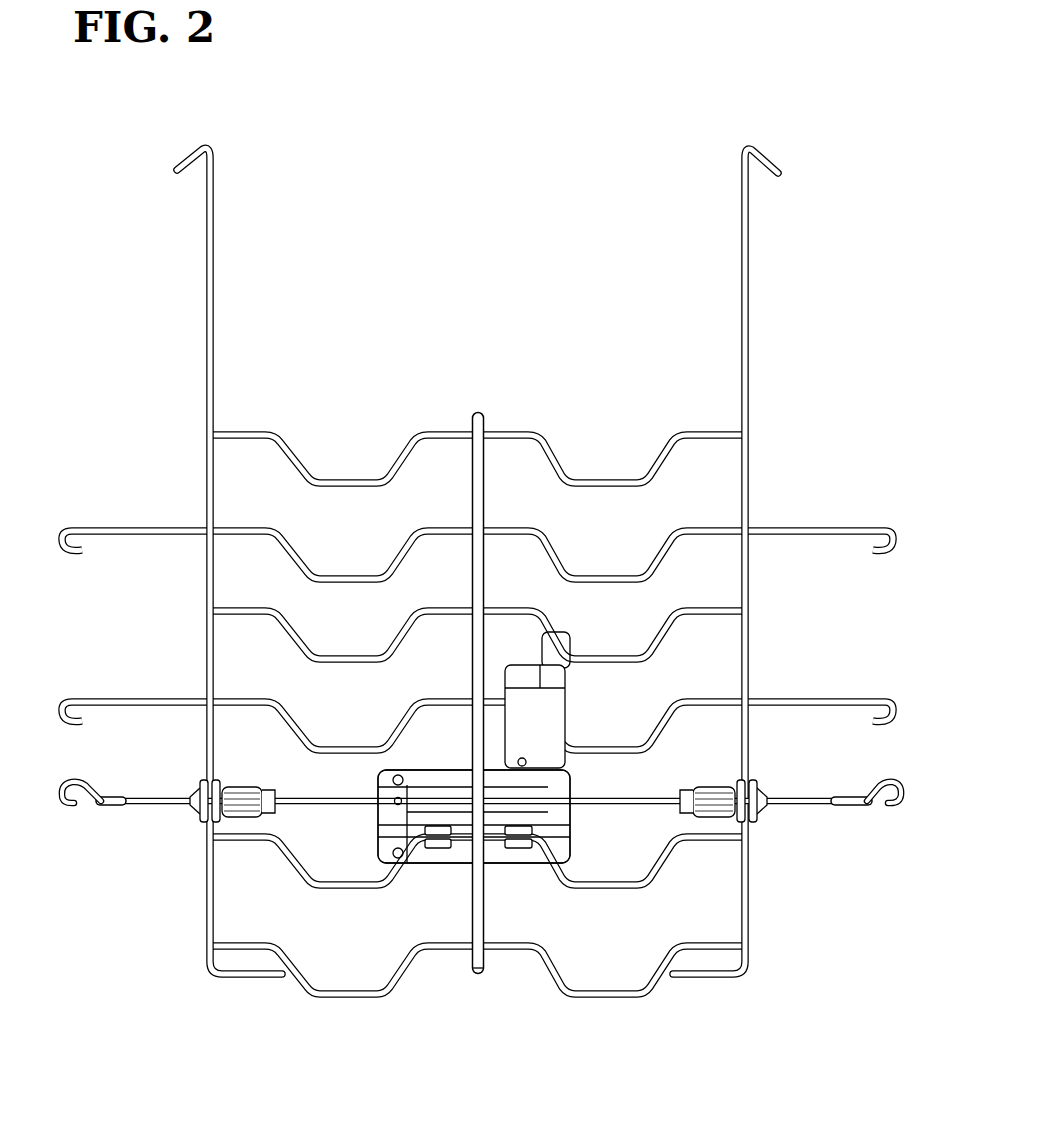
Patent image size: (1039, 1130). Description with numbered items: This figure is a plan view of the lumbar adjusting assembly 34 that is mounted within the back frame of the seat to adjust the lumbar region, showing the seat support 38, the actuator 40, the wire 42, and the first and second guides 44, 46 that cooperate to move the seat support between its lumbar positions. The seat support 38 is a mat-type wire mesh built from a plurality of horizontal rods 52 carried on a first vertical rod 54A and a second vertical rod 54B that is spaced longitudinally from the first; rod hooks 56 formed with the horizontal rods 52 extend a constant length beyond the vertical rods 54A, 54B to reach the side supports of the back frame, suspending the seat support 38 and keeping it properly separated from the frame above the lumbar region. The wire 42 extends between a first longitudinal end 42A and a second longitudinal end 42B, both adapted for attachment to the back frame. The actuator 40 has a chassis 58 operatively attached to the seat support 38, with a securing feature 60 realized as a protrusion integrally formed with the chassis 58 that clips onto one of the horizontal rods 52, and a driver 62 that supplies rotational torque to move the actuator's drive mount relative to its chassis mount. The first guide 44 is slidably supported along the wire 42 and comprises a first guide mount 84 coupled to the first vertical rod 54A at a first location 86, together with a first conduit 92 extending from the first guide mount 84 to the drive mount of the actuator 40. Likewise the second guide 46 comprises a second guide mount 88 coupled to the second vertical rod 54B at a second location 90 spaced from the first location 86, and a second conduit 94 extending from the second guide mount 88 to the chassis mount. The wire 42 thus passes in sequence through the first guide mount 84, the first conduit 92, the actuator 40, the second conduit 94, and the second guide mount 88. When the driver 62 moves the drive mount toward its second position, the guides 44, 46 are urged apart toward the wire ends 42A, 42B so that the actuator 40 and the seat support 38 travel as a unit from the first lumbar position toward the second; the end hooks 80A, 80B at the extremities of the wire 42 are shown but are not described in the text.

The assembly 34 is at (512, 222).
The seat support 38 is at (752, 400).
The actuator 40 is at (573, 768).
The wire 42 is at (160, 795).
The first longitudinal end 42A is at (828, 812).
The second longitudinal end 42B is at (124, 812).
The first guide 44 is at (692, 816).
The second guide 46 is at (273, 789).
The horizontal rods 52 is at (300, 468).
The first vertical rod 54A is at (752, 248).
The second vertical rod 54B is at (207, 280).
The rod hooks 56 is at (75, 528).
The chassis 58 is at (437, 782).
The securing feature 60 is at (518, 842).
The driver 62 is at (560, 706).
The first end hook 80A is at (905, 800).
The second end hook 80B is at (58, 808).
The first guide mount 84 is at (710, 800).
The first location 86 is at (756, 778).
The second guide mount 88 is at (243, 805).
The second location 90 is at (196, 823).
The first conduit 92 is at (633, 803).
The second conduit 94 is at (348, 803).